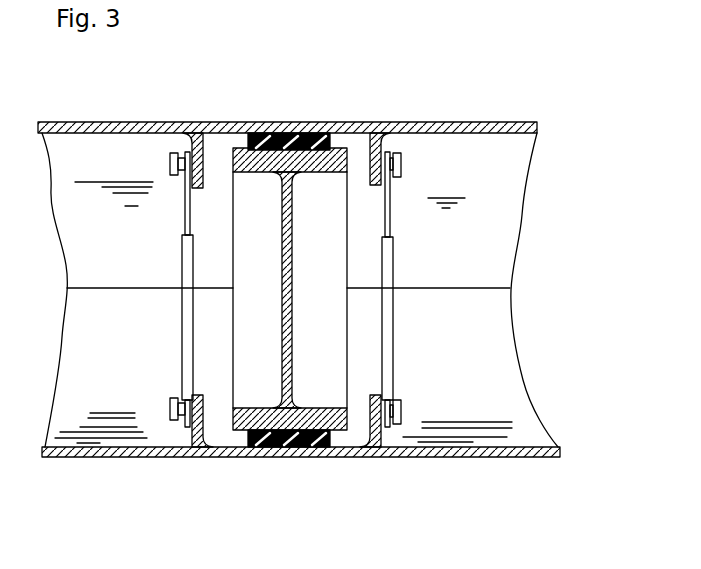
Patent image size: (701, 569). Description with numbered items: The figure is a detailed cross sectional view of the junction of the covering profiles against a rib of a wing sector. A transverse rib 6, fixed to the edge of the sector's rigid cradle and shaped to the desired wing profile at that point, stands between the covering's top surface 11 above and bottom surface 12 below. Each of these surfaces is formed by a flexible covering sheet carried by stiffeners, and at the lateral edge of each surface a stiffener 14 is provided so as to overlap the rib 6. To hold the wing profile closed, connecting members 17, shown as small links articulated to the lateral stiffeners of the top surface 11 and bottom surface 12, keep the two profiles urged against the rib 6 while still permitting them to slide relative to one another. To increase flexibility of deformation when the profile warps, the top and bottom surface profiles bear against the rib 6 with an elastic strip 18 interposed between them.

The transverse rib 6 is at (292, 282).
The top surface 11 is at (497, 122).
The bottom surface 12 is at (541, 458).
The lateral stiffener 14 is at (400, 123).
The connecting member 17 is at (392, 277).
The elastic strip 18 is at (287, 123).